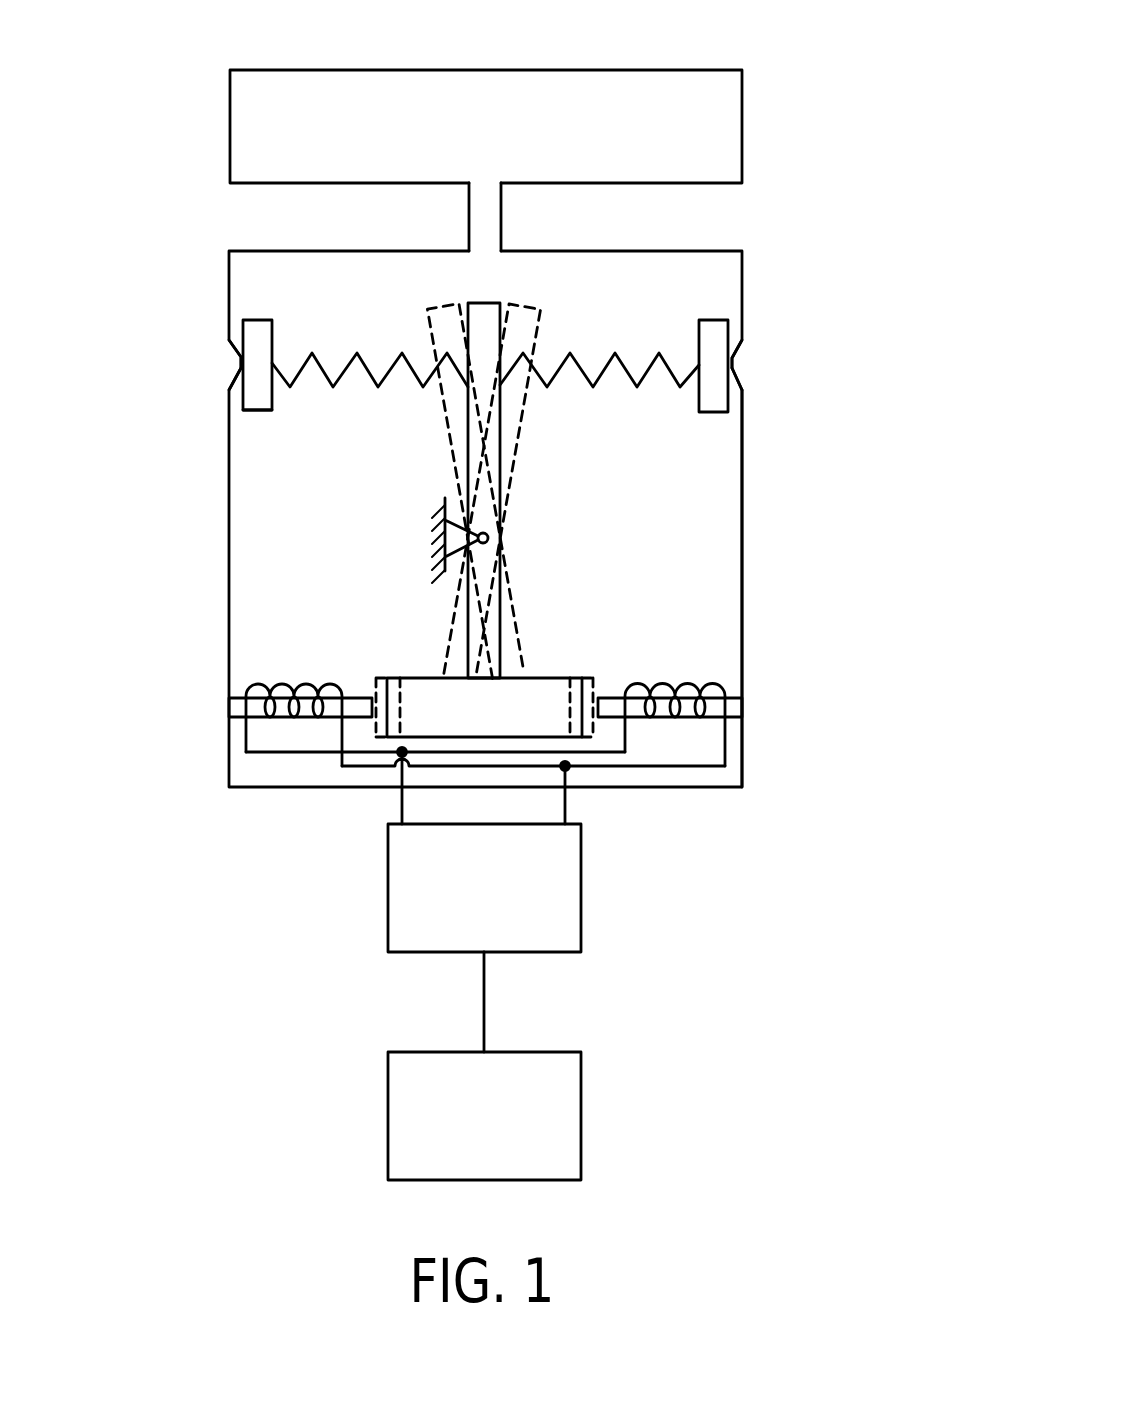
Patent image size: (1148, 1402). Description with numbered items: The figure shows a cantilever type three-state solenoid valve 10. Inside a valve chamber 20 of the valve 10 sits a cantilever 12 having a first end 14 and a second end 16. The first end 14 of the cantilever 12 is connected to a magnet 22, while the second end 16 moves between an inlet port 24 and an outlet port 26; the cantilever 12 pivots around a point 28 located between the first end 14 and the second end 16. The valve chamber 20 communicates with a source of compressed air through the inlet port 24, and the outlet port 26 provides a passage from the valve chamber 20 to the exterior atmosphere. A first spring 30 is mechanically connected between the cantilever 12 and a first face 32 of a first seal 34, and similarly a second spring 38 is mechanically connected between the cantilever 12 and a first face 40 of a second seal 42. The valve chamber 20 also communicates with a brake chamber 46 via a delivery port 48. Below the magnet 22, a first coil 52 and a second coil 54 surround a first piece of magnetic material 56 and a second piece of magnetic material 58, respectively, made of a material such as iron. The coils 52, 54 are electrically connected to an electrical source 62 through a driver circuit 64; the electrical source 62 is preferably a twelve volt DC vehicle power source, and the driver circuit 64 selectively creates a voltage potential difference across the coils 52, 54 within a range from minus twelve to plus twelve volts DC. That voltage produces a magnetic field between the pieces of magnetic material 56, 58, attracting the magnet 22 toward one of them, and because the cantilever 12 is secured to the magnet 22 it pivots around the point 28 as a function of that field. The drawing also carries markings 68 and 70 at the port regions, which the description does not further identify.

The three-state solenoid valve 10 is at (888, 122).
The cantilever 12 is at (467, 477).
The first end 14 is at (472, 633).
The second end 16 is at (485, 318).
The valve chamber 20 is at (732, 768).
The magnet 22 is at (543, 680).
The inlet port 24 is at (240, 366).
The outlet port 26 is at (733, 362).
The point 28 is at (488, 537).
The first spring 30 is at (320, 363).
The first face 32 is at (273, 337).
The first seal 34 is at (257, 402).
The second spring 38 is at (615, 355).
The first face 40 is at (699, 410).
The second seal 42 is at (717, 397).
The brake chamber 46 is at (692, 97).
The delivery port 48 is at (485, 205).
The first coil 52 is at (283, 683).
The second coil 54 is at (687, 683).
The first piece of magnetic material 56 is at (237, 707).
The second piece of magnetic material 58 is at (733, 707).
The electrical source 62 is at (581, 1108).
The driver circuit 64 is at (581, 908).
The left contact tip 68 is at (240, 369).
The right contact tip 70 is at (733, 366).